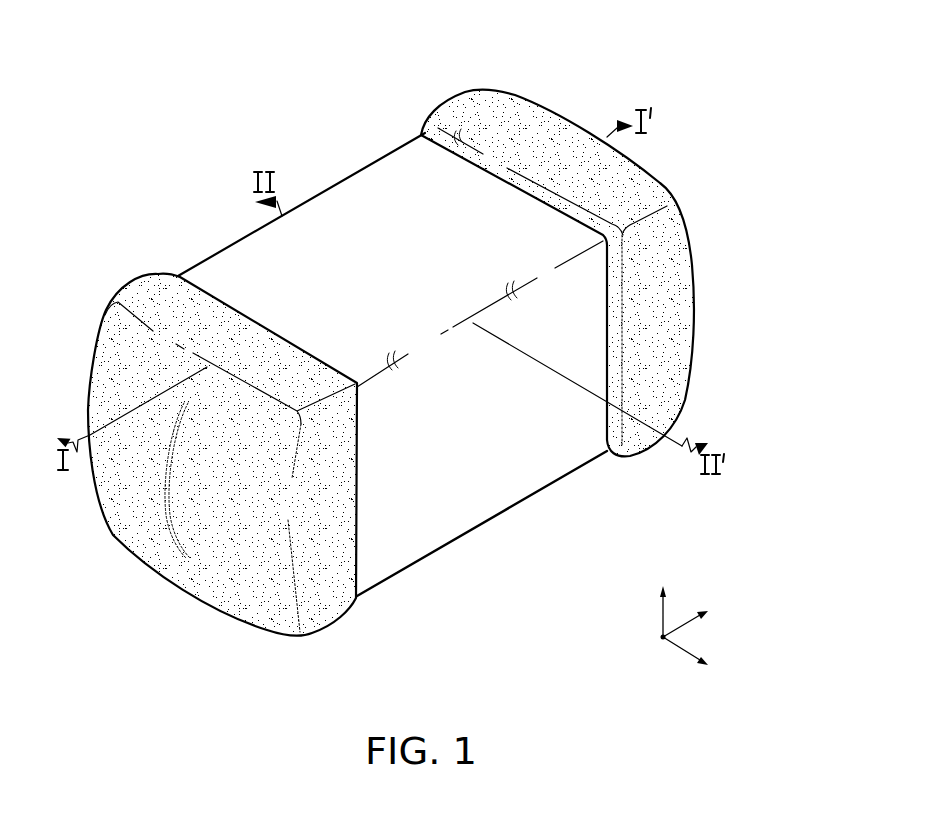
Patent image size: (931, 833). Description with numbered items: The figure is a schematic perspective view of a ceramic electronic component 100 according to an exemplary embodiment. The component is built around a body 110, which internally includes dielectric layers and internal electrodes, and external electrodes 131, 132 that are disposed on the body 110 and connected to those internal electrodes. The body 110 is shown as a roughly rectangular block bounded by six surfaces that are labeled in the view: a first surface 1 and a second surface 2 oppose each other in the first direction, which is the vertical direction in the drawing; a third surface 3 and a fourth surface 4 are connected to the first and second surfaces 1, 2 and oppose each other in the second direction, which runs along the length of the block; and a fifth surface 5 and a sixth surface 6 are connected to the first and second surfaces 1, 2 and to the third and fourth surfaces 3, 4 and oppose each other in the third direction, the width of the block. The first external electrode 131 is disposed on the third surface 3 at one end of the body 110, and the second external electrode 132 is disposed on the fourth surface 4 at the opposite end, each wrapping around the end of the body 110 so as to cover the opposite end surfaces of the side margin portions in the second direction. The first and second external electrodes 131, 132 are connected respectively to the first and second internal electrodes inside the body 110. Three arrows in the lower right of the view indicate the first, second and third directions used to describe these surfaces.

The ceramic electronic component 100 is at (270, 31).
The body 110 is at (350, 193).
The first external electrode 131 is at (142, 287).
The second external electrode 132 is at (467, 104).
The first surface 1 is at (458, 545).
The second surface 2 is at (402, 168).
The third surface 3 is at (130, 522).
The fourth surface 4 is at (540, 114).
The fifth surface 5 is at (228, 244).
The sixth surface 6 is at (540, 472).